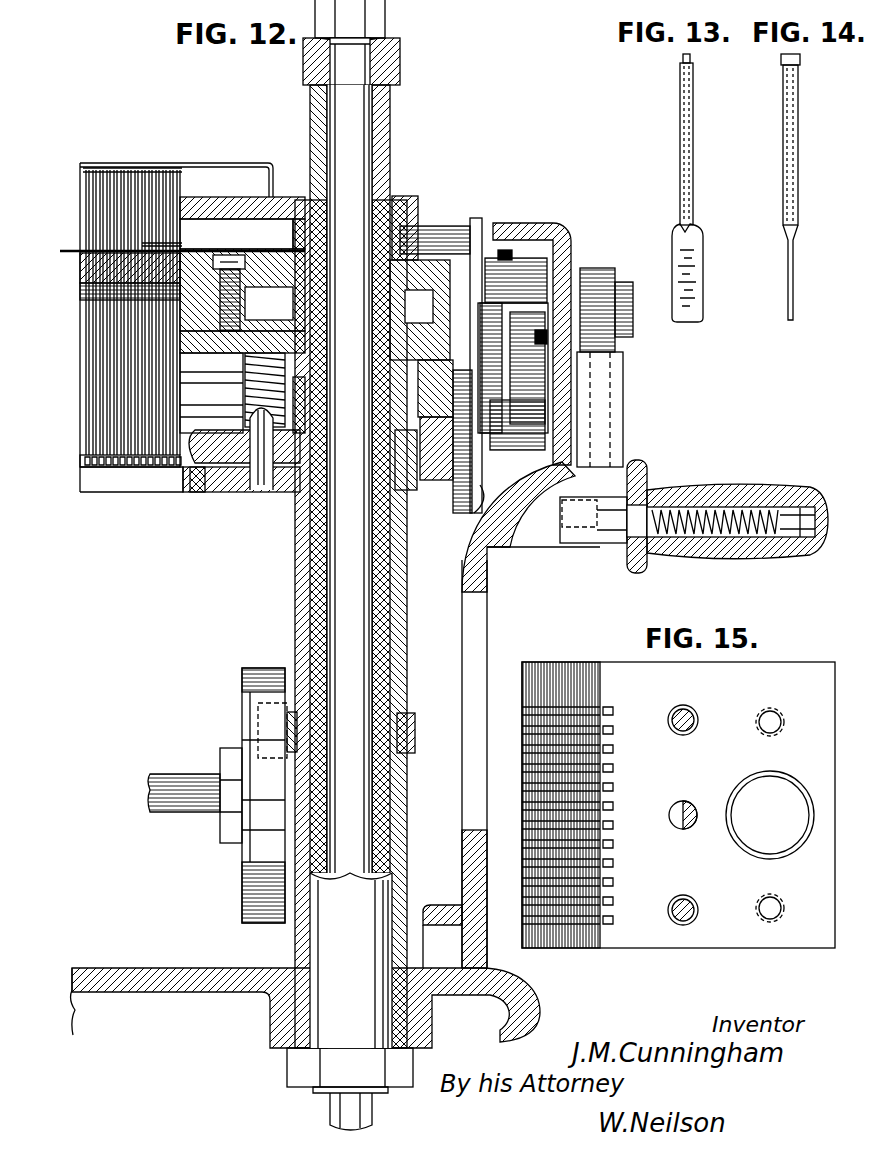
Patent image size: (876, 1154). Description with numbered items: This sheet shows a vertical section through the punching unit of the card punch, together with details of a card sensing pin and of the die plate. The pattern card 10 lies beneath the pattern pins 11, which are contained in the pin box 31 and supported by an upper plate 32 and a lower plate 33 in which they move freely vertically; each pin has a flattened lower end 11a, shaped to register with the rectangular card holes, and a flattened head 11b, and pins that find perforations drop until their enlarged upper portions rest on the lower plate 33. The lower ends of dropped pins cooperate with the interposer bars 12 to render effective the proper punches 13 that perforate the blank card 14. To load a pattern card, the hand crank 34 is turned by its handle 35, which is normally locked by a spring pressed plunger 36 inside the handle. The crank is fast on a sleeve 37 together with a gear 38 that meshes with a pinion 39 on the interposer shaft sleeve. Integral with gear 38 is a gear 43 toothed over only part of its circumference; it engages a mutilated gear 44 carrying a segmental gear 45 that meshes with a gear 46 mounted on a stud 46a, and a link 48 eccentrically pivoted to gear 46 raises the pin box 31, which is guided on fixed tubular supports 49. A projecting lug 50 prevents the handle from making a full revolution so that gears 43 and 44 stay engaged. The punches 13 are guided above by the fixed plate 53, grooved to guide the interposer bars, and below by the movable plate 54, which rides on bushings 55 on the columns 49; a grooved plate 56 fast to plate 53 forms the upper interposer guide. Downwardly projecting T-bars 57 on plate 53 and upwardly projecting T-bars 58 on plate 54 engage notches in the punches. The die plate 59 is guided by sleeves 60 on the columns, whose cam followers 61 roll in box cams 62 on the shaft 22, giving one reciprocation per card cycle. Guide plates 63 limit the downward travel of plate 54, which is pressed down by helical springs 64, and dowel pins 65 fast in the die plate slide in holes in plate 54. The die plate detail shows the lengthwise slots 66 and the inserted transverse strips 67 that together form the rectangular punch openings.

In FIG. 12, the pattern card 10 is at (82, 252).
In FIG. 12, the pattern pin 11 is at (128, 190).
In FIG. 13, the pattern pin 11 is at (694, 152).
In FIG. 14, the pattern pin 11 is at (797, 152).
In FIG. 12, the flattened lower end 11a is at (155, 245).
In FIG. 13, the flattened lower end 11a is at (704, 281).
In FIG. 14, the flattened lower end 11a is at (794, 281).
In FIG. 12, the flattened head 11b is at (160, 166).
In FIG. 13, the flattened head 11b is at (690, 60).
In FIG. 14, the flattened head 11b is at (800, 60).
In FIG. 12, the interposer bars 12 is at (120, 316).
In FIG. 12, the punches 13 is at (120, 424).
In FIG. 12, the blank card 14 is at (84, 464).
In FIG. 12, the shaft 22 is at (172, 812).
In FIG. 12, the pin box 31 is at (222, 163).
In FIG. 12, the upper plate 32 is at (210, 200).
In FIG. 12, the lower plate 33 is at (226, 249).
In FIG. 12, the hand crank 34 is at (600, 384).
In FIG. 12, the handle 35 is at (762, 488).
In FIG. 12, the spring pressed plunger 36 is at (636, 535).
In FIG. 12, the sleeve 37 is at (578, 270).
In FIG. 12, the gear 38 is at (510, 252).
In FIG. 12, the pinion 39 is at (520, 352).
In FIG. 12, the gear 43 is at (490, 275).
In FIG. 12, the mutilated gear 44 is at (496, 452).
In FIG. 12, the segmental gear 45 is at (462, 320).
In FIG. 12, the gear 46 is at (455, 500).
In FIG. 12, the stud 46a is at (440, 420).
In FIG. 12, the link 48 is at (478, 512).
In FIG. 12, the tubular supports 49 is at (386, 170).
In FIG. 12, the projecting lug 50 is at (582, 545).
In FIG. 12, the upper guide plate 53 is at (269, 307).
In FIG. 12, the lower guide plate 54 is at (232, 428).
In FIG. 12, the bushings 55 is at (412, 395).
In FIG. 12, the grooved plate 56 is at (258, 278).
In FIG. 12, the T-bars 57 is at (204, 371).
In FIG. 12, the T-bars 58 is at (208, 404).
In FIG. 12, the die plate 59 is at (232, 484).
In FIG. 15, the die plate 59 is at (652, 946).
In FIG. 12, the sleeves 60 is at (296, 532).
In FIG. 12, the cam followers 61 is at (262, 729).
In FIG. 12, the box cams 62 is at (258, 878).
In FIG. 12, the guide plates 63 is at (205, 485).
In FIG. 12, the helical springs 64 is at (278, 390).
In FIG. 15, the helical springs 64 is at (697, 716).
In FIG. 12, the dowel pins 65 is at (262, 478).
In FIG. 15, the dowel pins 65 is at (690, 810).
In FIG. 12, the slots 66 is at (103, 480).
In FIG. 15, the slots 66 is at (615, 825).
In FIG. 12, the strips 67 is at (160, 470).
In FIG. 15, the strips 67 is at (590, 662).